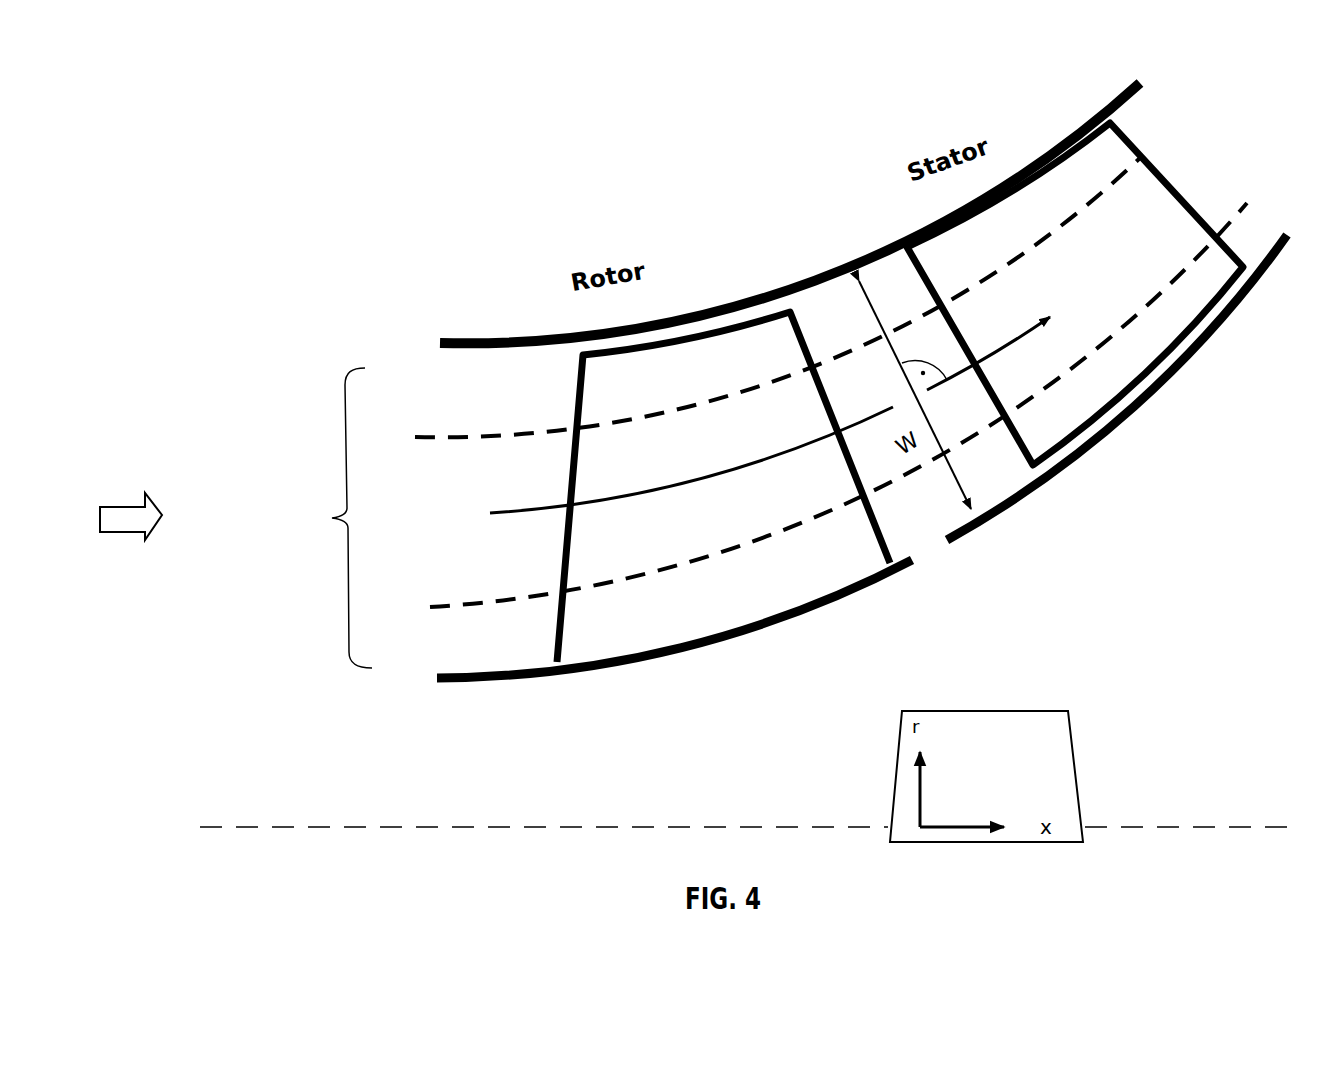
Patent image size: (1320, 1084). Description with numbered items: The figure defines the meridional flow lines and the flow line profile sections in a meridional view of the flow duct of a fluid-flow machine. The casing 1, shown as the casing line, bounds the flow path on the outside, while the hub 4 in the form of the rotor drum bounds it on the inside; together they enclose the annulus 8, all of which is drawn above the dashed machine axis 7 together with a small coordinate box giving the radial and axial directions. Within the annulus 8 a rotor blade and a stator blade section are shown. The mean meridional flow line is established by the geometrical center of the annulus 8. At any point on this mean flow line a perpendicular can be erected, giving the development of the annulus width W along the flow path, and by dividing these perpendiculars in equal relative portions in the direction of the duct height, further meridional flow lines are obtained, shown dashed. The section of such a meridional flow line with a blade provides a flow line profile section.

The casing 1 is at (488, 337).
The hub 4 is at (477, 685).
The machine axis 7 is at (707, 827).
The annulus 8 is at (331, 518).